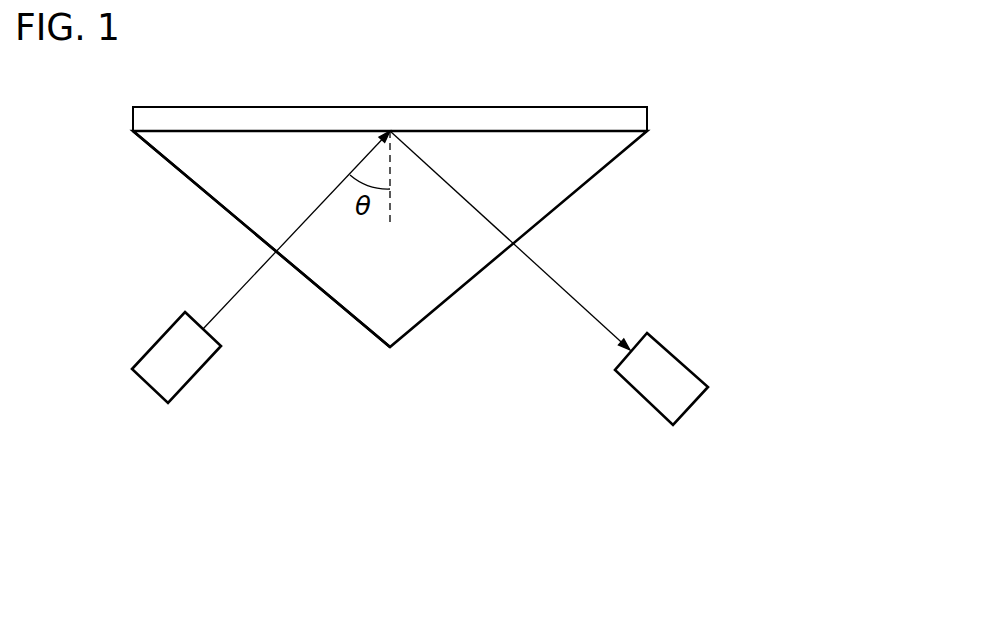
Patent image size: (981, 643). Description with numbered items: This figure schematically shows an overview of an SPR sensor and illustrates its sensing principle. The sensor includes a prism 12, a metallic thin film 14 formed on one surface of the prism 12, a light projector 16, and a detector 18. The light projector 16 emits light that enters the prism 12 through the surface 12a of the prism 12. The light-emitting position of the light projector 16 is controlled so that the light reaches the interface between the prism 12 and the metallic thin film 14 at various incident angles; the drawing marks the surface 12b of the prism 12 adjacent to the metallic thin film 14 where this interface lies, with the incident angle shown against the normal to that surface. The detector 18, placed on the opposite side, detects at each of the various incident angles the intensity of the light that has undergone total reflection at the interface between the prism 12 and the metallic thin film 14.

The prism 12 is at (426, 302).
The surface of the prism 12a is at (313, 284).
The prism top surface 12b is at (463, 130).
The metallic thin film 14 is at (640, 120).
The light projector 16 is at (188, 372).
The detector 18 is at (686, 400).